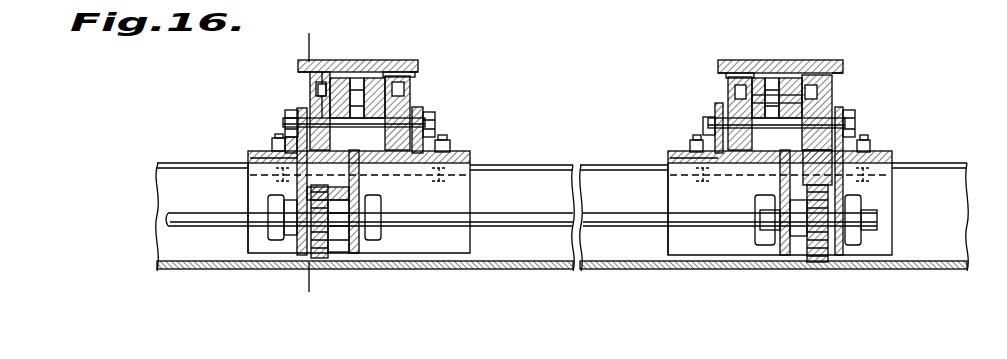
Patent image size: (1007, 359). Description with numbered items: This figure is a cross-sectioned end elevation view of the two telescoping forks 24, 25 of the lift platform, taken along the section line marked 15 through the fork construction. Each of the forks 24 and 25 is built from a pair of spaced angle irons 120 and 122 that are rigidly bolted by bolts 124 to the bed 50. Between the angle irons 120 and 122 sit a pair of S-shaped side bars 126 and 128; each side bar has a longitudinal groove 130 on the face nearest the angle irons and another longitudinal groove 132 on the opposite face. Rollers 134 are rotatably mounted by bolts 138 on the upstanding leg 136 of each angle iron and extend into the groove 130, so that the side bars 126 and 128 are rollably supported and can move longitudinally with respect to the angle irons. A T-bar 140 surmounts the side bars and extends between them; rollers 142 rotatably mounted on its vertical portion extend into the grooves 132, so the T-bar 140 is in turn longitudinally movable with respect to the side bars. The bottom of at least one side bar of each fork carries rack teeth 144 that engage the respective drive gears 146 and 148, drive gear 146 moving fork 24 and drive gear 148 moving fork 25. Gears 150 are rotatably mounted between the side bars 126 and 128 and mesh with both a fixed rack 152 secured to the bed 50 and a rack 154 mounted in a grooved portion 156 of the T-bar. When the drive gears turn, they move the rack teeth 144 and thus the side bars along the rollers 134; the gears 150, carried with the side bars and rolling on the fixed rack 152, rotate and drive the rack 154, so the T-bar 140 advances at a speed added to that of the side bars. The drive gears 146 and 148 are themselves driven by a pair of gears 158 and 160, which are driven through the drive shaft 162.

The section line 15- 15 is at (321, 46).
The fork 24 is at (380, 55).
The fork 25 is at (808, 56).
The bed 50 is at (548, 164).
The angle iron 120 is at (456, 157).
The angle iron 122 is at (250, 151).
The bolts 124 is at (278, 138).
The S-shaped side bar 126 is at (418, 95).
The S-shaped side bar 128 is at (306, 80).
The longitudinal groove 130 is at (310, 96).
The longitudinal groove 132 is at (327, 70).
The rollers 134 is at (296, 112).
The upstanding leg 136 is at (298, 110).
The bolts 138 is at (436, 128).
The T-bar 140 is at (410, 66).
The rollers 142 is at (416, 80).
The rack teeth 144 is at (297, 187).
The drive gear 146 is at (334, 263).
The drive gear 148 is at (813, 266).
The gears 150 is at (387, 173).
The fixed rack 152 is at (372, 172).
The rack 154 is at (354, 76).
The grooved portion 156 is at (768, 80).
The gear 158 is at (352, 253).
The gear 160 is at (877, 187).
The drive shaft 162 is at (542, 227).